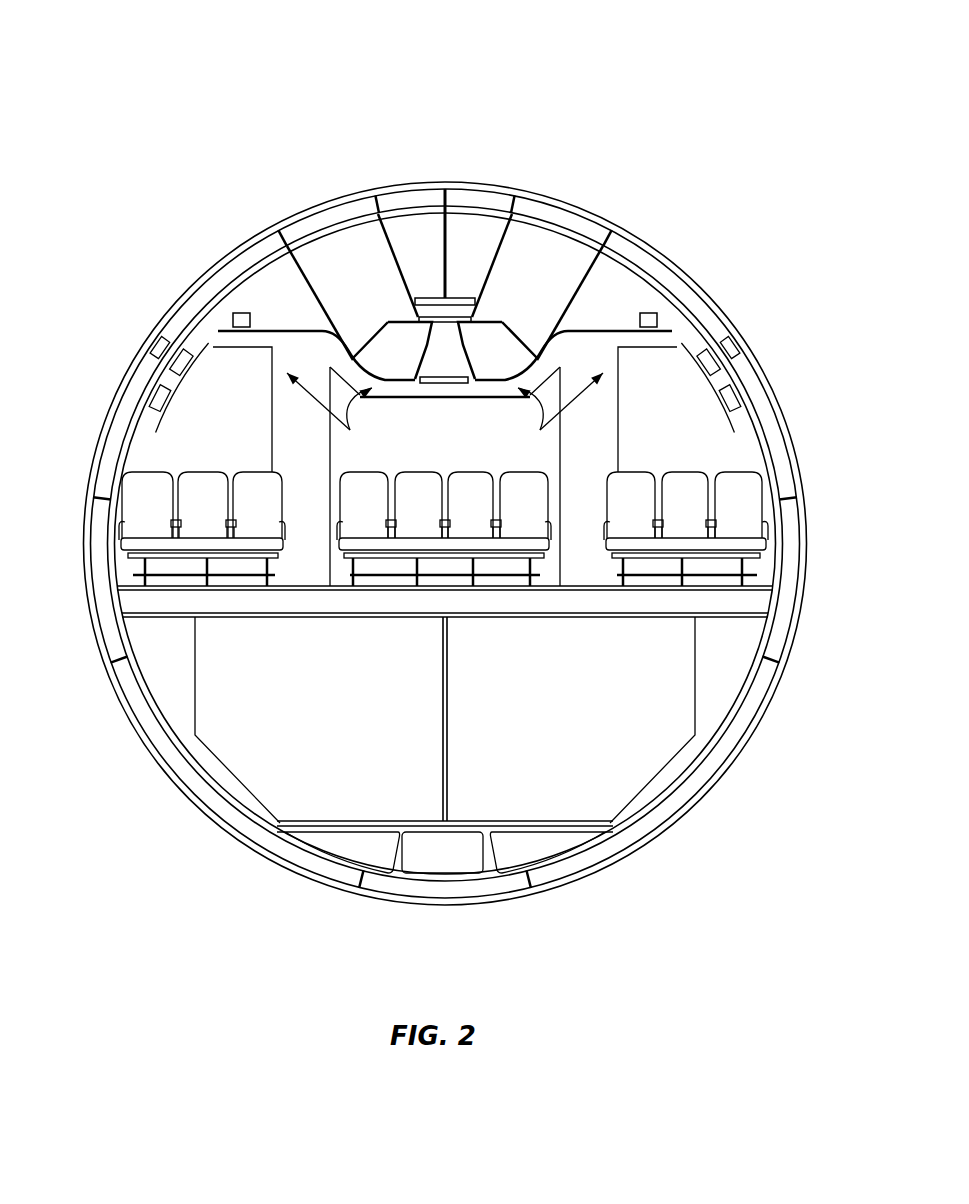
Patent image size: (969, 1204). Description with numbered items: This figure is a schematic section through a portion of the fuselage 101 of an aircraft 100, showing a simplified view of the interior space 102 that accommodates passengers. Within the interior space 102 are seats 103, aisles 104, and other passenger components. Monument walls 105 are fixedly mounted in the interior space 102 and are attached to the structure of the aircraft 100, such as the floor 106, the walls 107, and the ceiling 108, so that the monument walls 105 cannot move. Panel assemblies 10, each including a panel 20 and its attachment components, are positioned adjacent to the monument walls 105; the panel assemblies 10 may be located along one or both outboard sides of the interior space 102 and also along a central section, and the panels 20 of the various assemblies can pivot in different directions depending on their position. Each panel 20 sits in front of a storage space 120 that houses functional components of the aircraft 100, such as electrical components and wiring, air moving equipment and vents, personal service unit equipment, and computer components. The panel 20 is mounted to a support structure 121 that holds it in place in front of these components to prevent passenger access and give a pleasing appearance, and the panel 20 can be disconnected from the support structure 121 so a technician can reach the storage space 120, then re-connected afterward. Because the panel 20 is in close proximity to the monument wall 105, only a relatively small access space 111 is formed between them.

The aircraft 100 is at (135, 128).
The fuselage 101 is at (500, 213).
The storage space 120 is at (400, 350).
The support structure 121 is at (297, 355).
The panel 20 is at (300, 365).
The ceiling 108 is at (284, 242).
The interior space 102 is at (296, 262).
The access space 111 is at (233, 318).
The monument wall 105 is at (165, 428).
The seats 103 is at (255, 493).
The walls 107 is at (737, 500).
The floor 106 is at (753, 590).
The aisles 104 is at (305, 552).
The panel assembly 10 is at (445, 410).